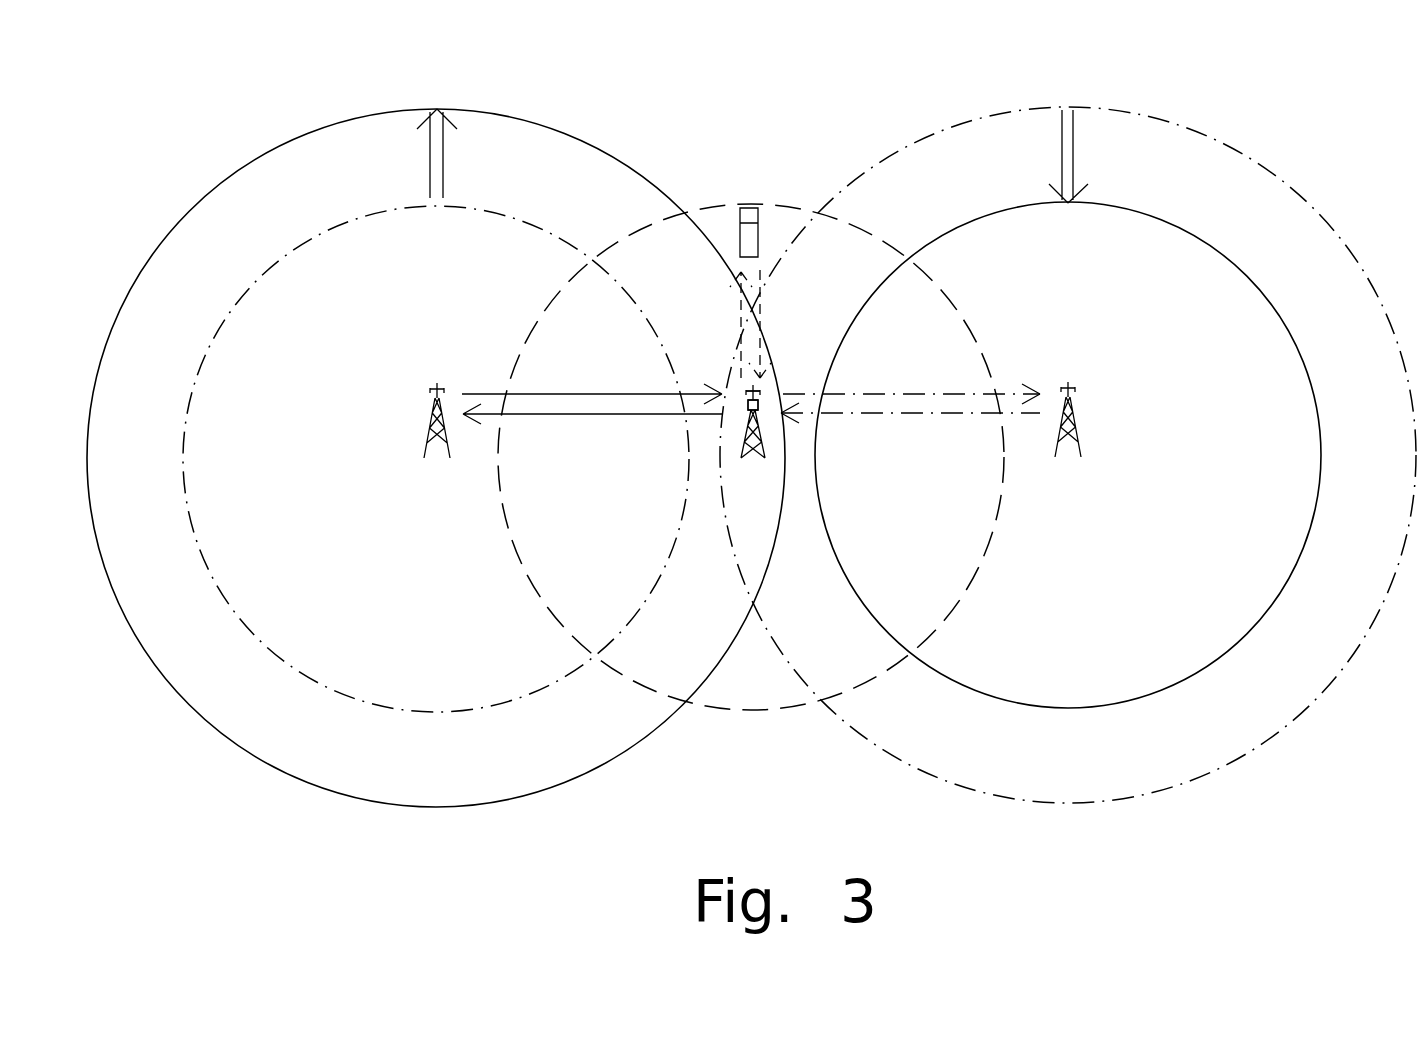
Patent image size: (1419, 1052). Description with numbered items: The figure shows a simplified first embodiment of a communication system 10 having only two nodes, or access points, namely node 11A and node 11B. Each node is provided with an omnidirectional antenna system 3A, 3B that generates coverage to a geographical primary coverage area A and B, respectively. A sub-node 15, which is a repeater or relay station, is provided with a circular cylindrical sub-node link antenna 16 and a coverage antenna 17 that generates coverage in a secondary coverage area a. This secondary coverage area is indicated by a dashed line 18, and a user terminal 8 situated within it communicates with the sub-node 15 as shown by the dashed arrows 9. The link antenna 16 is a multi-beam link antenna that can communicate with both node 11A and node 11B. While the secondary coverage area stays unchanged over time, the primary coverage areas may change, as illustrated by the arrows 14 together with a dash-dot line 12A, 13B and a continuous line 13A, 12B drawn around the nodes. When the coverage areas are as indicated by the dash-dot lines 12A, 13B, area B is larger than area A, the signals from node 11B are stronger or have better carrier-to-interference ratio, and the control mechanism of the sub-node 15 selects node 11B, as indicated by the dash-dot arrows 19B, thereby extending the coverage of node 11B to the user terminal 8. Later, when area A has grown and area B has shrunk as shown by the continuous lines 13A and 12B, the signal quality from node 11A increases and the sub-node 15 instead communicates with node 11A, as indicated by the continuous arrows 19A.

The communication system 10 is at (278, 98).
The continuous line 13A is at (436, 445).
The dash-dot line 12A is at (436, 459).
The dash-dot line 13B is at (1068, 445).
The continuous line 12B is at (1068, 455).
The dashed line 18 is at (751, 480).
The arrows 14 is at (768, 156).
The user terminal 8 is at (756, 226).
The dashed arrows 9 is at (760, 324).
The antenna system 3A is at (445, 415).
The antenna system 3B is at (1086, 420).
The node 11A is at (445, 445).
The node 11B is at (1080, 445).
The sub-node 15 is at (757, 440).
The sub-node link antenna 16 is at (760, 412).
The coverage antenna 17 is at (746, 390).
The continuous arrows 19A is at (592, 424).
The dash-dot arrows 19B is at (910, 424).